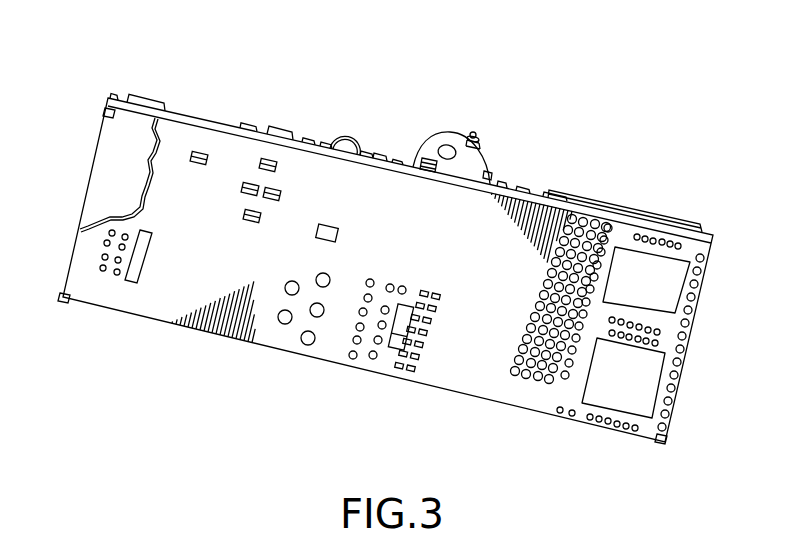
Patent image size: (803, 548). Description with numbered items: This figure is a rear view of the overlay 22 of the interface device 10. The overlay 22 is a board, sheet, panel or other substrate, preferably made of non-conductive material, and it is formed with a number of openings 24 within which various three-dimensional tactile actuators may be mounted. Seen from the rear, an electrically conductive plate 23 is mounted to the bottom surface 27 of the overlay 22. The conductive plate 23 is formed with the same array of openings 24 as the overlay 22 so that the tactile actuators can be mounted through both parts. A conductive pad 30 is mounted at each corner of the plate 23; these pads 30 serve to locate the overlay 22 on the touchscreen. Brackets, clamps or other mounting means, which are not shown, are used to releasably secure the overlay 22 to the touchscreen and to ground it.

The interface device 10 is at (465, 76).
The overlay 22 is at (94, 150).
The electrically conductive plate 23 is at (165, 296).
The openings 24 is at (268, 164).
The bottom surface 27 is at (111, 182).
The conductive pad 30 is at (104, 110).